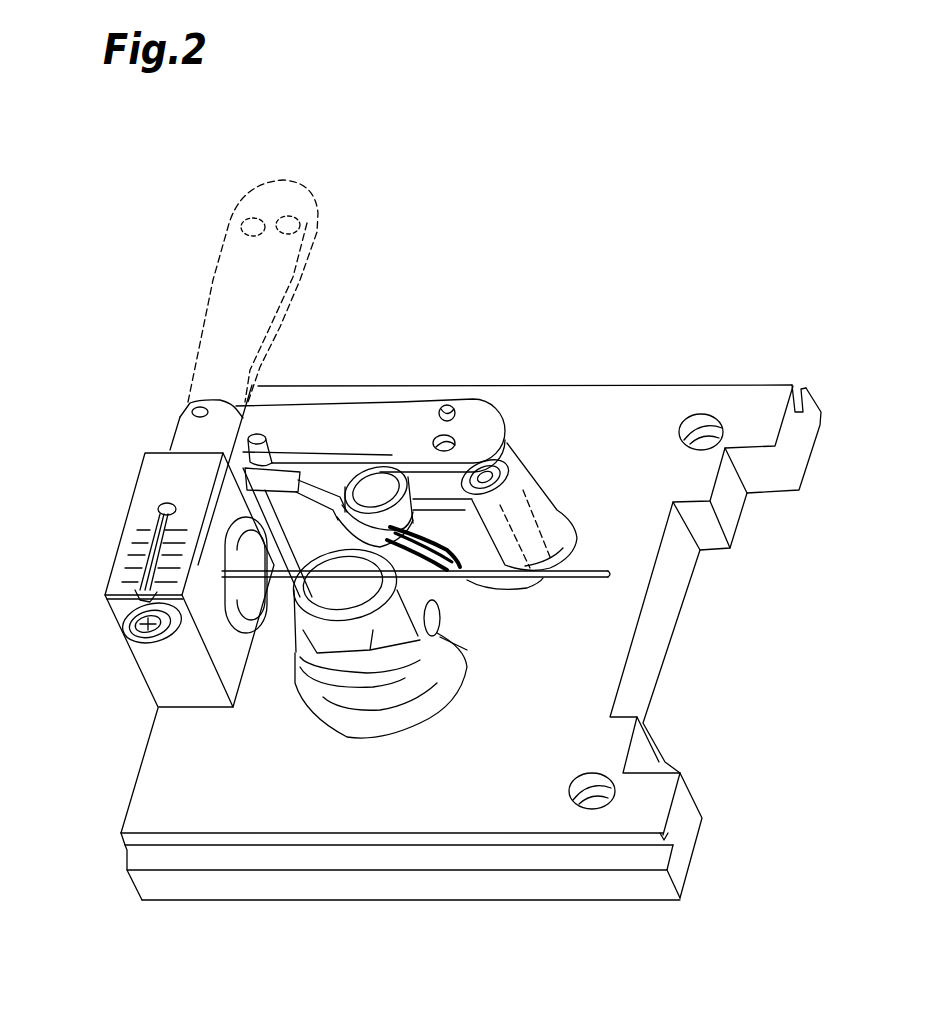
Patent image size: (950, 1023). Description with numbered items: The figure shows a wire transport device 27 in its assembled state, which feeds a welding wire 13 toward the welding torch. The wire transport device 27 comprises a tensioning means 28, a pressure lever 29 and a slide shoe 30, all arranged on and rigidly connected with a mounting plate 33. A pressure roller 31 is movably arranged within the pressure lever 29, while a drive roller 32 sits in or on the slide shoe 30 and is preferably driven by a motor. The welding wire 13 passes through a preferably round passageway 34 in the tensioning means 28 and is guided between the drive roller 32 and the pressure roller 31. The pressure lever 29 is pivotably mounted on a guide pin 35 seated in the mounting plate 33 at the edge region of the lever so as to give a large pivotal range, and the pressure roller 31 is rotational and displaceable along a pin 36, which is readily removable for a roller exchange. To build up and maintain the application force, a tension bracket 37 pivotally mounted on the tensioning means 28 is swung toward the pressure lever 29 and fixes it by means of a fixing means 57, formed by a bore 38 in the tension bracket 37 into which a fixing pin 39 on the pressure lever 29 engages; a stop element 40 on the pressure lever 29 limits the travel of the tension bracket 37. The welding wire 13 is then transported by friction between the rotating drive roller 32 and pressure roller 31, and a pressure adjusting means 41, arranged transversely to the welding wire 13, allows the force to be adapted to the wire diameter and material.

The welding wire 13 is at (612, 580).
The wire transport device 27 is at (645, 247).
The tensioning means 28 is at (128, 490).
The pressure lever 29 is at (541, 505).
The slide shoe 30 is at (280, 723).
The pressure roller 31 is at (425, 545).
The drive roller 32 is at (383, 670).
The mounting plate 33 is at (645, 408).
The passageway 34 is at (232, 553).
The guide pin 35 is at (513, 522).
The pin 36 is at (375, 540).
The tension bracket 37 is at (240, 283).
The bore 38 is at (298, 225).
The fixing pin 39 is at (447, 405).
The stop element 40 is at (250, 437).
The pressure adjusting means 41 is at (136, 648).
The fixing means 57 is at (487, 390).